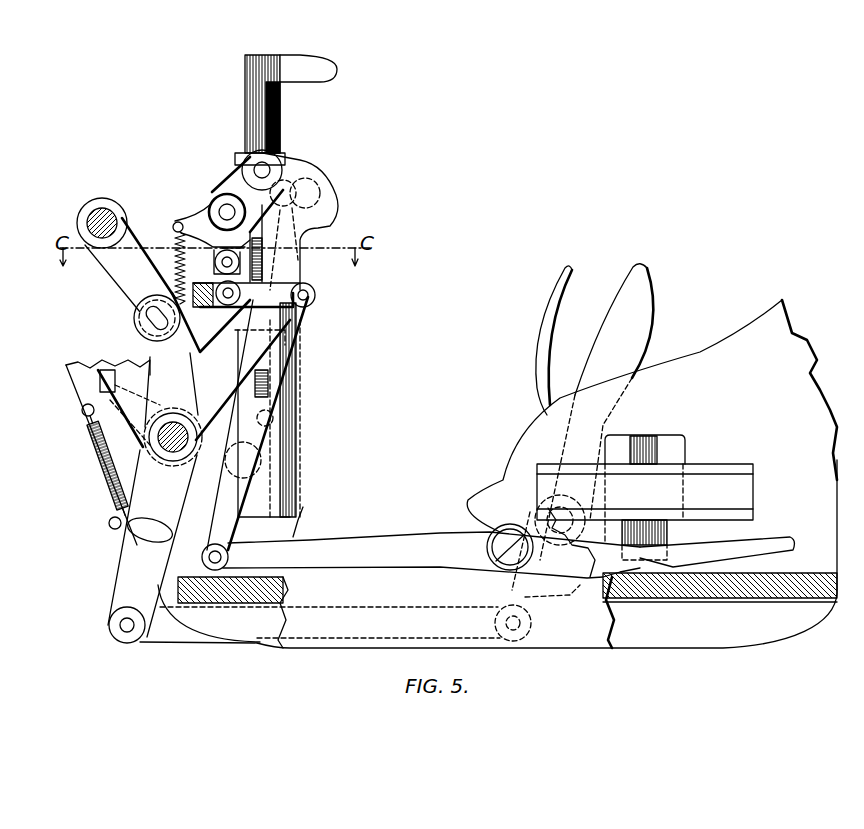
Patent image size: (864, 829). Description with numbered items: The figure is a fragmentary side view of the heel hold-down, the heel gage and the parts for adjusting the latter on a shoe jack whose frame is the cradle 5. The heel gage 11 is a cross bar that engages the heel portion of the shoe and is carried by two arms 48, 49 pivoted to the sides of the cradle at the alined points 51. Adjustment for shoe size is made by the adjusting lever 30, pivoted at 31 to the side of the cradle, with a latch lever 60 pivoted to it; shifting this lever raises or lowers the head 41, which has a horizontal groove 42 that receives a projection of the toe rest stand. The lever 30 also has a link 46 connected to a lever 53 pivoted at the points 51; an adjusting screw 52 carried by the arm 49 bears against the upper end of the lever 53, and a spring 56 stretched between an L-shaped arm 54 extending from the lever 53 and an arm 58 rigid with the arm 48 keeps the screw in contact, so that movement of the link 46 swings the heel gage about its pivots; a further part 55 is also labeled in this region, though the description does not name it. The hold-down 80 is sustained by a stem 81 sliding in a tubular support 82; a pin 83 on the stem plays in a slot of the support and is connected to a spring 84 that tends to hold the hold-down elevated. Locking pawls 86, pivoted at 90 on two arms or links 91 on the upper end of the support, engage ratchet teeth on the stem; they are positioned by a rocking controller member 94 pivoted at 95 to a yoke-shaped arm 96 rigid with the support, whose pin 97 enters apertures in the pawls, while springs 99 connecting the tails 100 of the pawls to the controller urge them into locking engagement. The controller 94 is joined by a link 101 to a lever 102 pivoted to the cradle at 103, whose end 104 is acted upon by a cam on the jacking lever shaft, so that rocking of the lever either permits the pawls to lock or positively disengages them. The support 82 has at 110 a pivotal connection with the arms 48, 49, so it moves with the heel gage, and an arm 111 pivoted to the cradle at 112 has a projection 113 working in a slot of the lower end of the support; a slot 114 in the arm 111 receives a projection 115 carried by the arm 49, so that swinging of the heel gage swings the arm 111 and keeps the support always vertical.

The cradle 5 is at (530, 433).
The heel gage 11 is at (327, 182).
The adjusting lever 30 is at (637, 330).
The pivot 31 is at (510, 463).
The head 41 is at (712, 460).
The horizontal groove 42 is at (720, 487).
The link 46 is at (213, 635).
The heel gage arm 48 is at (263, 385).
The heel gage arm 49 is at (340, 240).
The pivotal points 51 is at (150, 450).
The adjusting screw 52 is at (300, 317).
The lever 53 is at (143, 367).
The L-shaped arm 54 is at (150, 495).
The plate 55 is at (105, 412).
The spring 56 is at (87, 460).
The arm 58 is at (100, 403).
The latch lever 60 is at (547, 307).
The hold-down 80 is at (306, 67).
The stem 81 is at (282, 118).
The tubular support 82 is at (288, 410).
The pin 83 is at (293, 427).
The spring 84 is at (312, 238).
The locking pawls 86 is at (212, 208).
The pawl pivot 90 is at (223, 205).
The arms or links 91 is at (233, 170).
The rocking controller member 94 is at (318, 293).
The controller pivot 95 is at (277, 293).
The yoke-shaped arm 96 is at (290, 338).
The pin 97 is at (216, 262).
The spring 99 is at (173, 255).
The pawl tail 100 is at (184, 220).
The link 101 is at (275, 372).
The lever 102 is at (398, 540).
The lever pivot 103 is at (495, 542).
The lever end 104 is at (765, 540).
The pivotal connection 110 is at (266, 170).
The arm 111 is at (112, 270).
The arm pivot 112 is at (102, 210).
The projection 113 is at (244, 433).
The slot 114 is at (140, 303).
The projection 115 is at (145, 320).